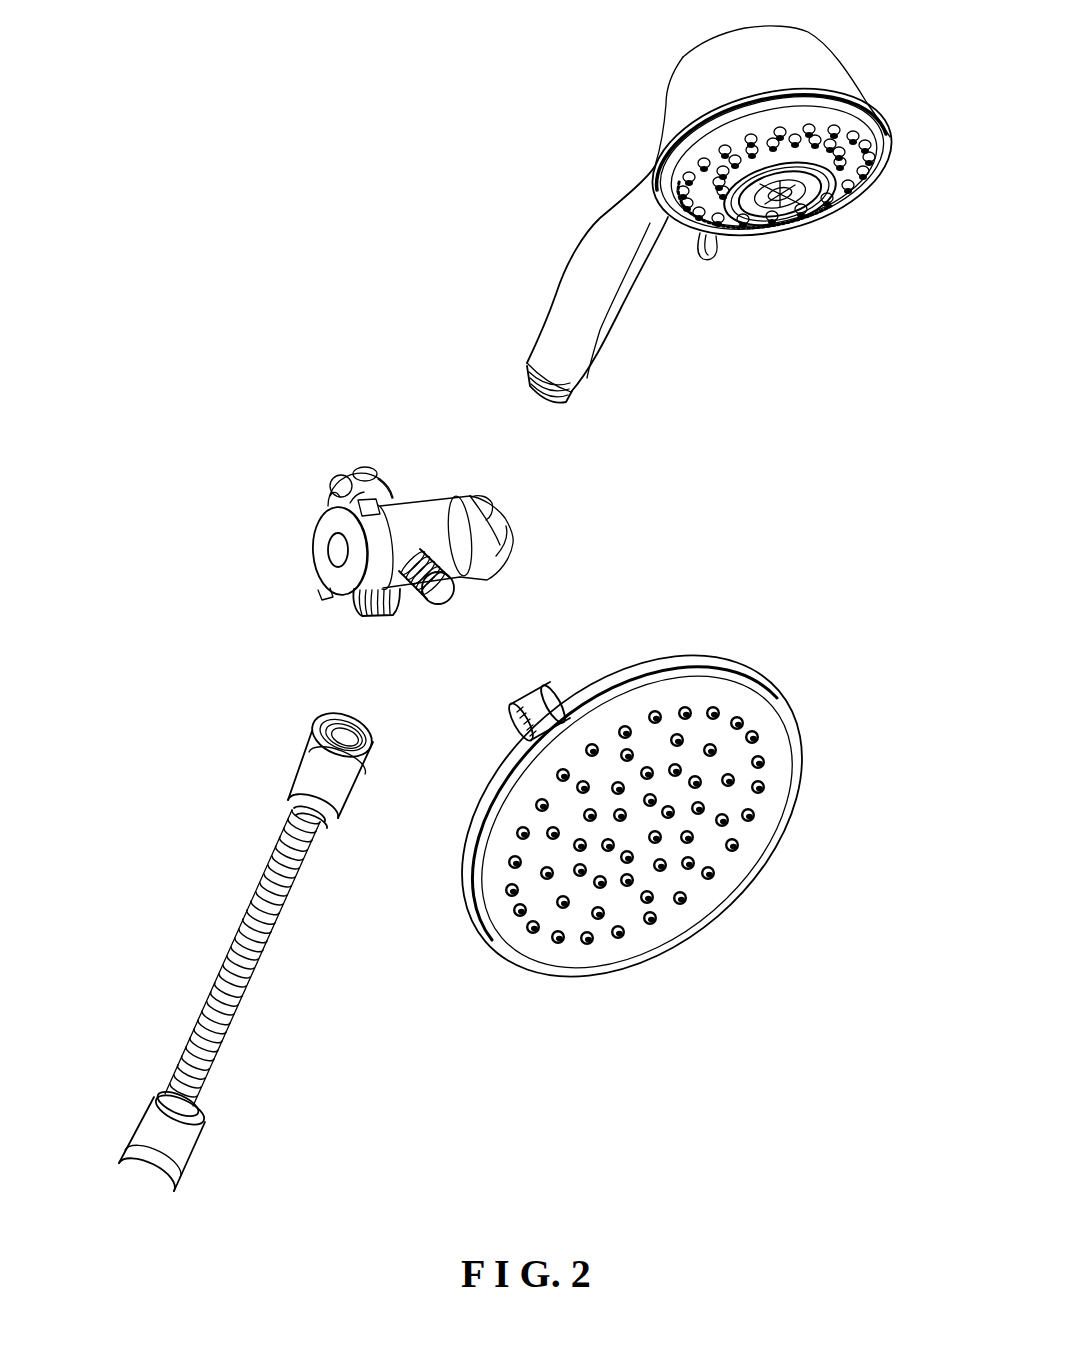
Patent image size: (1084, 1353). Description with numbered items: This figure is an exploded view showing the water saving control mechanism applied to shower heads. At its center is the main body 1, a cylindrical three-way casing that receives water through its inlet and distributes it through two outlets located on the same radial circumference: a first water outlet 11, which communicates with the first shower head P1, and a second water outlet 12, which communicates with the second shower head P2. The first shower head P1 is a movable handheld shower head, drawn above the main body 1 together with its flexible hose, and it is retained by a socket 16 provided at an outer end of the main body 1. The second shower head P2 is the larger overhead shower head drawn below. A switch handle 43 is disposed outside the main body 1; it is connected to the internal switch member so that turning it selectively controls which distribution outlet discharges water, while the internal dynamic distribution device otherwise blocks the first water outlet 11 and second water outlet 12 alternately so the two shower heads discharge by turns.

The first shower head P1 is at (586, 262).
The main body 1 is at (411, 555).
The switch handle 43 is at (326, 529).
The socket 16 is at (496, 556).
The second water outlet 12 is at (442, 593).
The first water outlet 11 is at (377, 618).
The second shower head P2 is at (748, 666).